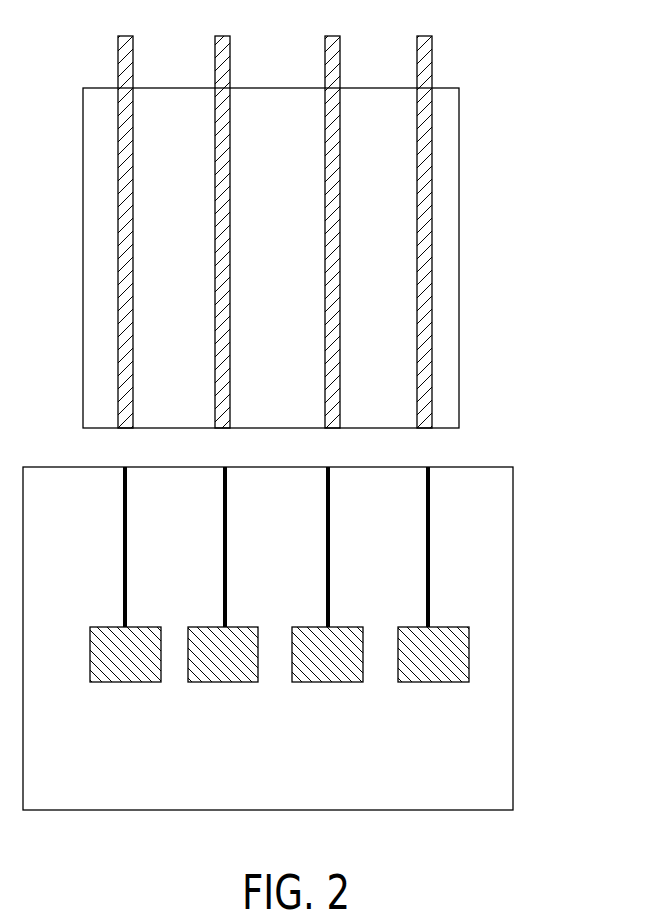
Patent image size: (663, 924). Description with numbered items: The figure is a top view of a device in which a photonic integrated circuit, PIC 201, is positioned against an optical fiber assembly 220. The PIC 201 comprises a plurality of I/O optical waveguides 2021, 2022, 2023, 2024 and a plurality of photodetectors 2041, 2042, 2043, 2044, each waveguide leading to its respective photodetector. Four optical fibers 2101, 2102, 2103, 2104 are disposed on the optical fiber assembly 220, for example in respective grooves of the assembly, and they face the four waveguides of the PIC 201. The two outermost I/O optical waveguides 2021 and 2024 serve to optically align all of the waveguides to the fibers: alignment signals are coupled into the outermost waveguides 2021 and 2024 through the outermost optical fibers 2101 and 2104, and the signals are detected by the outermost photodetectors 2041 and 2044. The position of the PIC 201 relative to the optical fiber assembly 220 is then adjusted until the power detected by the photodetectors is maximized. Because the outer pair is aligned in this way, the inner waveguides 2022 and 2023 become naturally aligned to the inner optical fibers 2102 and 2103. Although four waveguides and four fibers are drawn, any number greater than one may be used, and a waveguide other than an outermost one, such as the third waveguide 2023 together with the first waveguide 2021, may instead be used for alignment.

The optical fiber assembly 220 is at (459, 196).
The first optical fiber 2101 is at (118, 43).
The second optical fiber 2102 is at (215, 36).
The third optical fiber 2103 is at (325, 36).
The fourth optical fiber 2104 is at (417, 36).
The PIC 201 is at (513, 672).
The first I/O optical waveguide 2021 is at (123, 552).
The second I/O optical waveguide 2022 is at (223, 536).
The third I/O optical waveguide 2023 is at (326, 532).
The fourth I/O optical waveguide 2024 is at (427, 524).
The first photodetector 2041 is at (138, 682).
The second photodetector 2042 is at (237, 682).
The third photodetector 2043 is at (333, 682).
The fourth photodetector 2044 is at (432, 682).